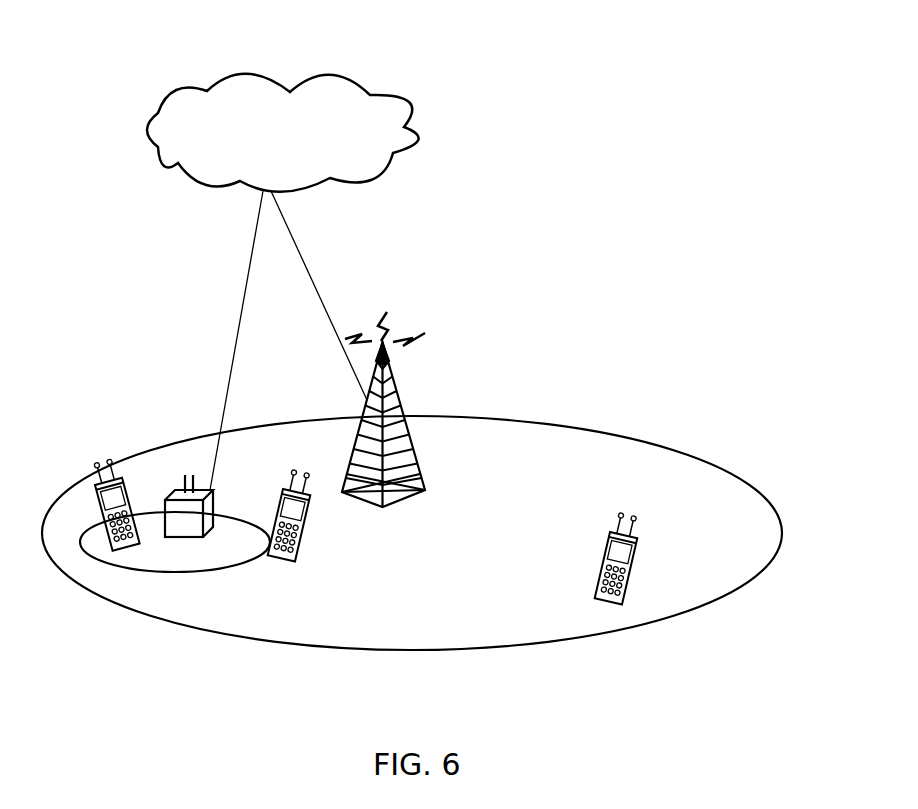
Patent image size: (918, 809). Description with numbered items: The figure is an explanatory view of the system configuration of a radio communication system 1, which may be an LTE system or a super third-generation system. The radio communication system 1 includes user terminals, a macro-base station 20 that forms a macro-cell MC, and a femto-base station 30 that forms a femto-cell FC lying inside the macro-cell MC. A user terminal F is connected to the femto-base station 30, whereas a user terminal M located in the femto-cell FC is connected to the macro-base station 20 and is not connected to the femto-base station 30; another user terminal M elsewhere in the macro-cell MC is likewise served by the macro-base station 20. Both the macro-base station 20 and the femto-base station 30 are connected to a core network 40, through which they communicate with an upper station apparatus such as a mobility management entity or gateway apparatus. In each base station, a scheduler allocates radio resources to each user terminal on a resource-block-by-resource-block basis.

The radio communication system 1 is at (556, 60).
The core network 40 is at (377, 90).
The macro-base station 20 is at (426, 455).
The femto-base station 30 is at (166, 499).
The macro-cell MC is at (590, 431).
The femto-cell FC is at (231, 512).
The user terminal F is at (101, 518).
The user terminal M is at (303, 522).